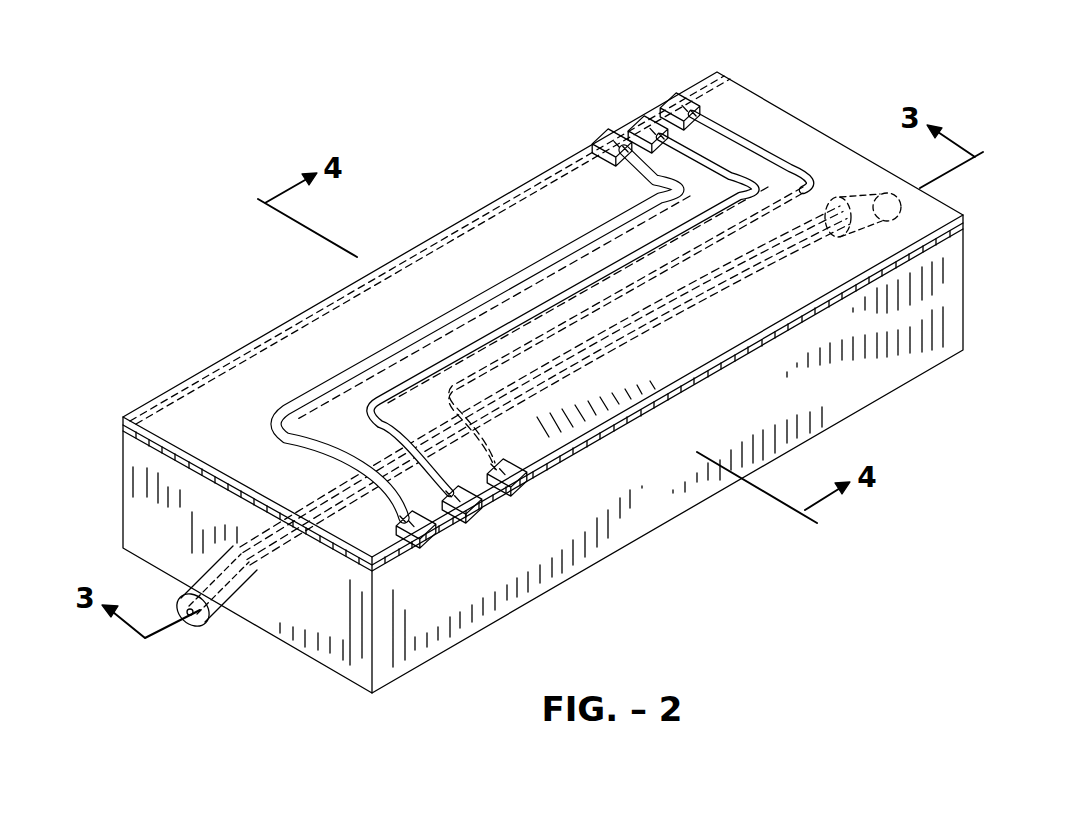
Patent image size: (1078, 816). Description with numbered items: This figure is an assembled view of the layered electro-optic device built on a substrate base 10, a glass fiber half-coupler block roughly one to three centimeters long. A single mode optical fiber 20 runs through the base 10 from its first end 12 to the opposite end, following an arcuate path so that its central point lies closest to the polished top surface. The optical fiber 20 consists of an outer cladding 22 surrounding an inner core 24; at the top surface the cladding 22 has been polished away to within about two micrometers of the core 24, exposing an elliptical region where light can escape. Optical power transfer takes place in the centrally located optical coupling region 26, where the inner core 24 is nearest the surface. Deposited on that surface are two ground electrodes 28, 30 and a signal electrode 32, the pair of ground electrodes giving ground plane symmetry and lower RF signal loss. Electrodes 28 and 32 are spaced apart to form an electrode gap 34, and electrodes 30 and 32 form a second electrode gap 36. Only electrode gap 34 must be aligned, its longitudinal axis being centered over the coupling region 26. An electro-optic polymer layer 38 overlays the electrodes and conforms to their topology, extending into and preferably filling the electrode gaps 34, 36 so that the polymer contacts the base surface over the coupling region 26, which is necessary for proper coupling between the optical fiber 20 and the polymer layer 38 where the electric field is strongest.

The substrate base 10 is at (963, 293).
The first end 12 is at (147, 510).
The single mode optical fiber 20 is at (180, 643).
The outer cladding 22 is at (203, 571).
The inner core 24 is at (227, 608).
The optical coupling region 26 is at (660, 302).
The ground electrode 28 is at (675, 105).
The ground electrode 30 is at (603, 150).
The signal electrode 32 is at (640, 134).
The electrode gap 34 is at (792, 197).
The electrode gap 36 is at (483, 292).
The electro-optic polymer layer 38 is at (173, 420).